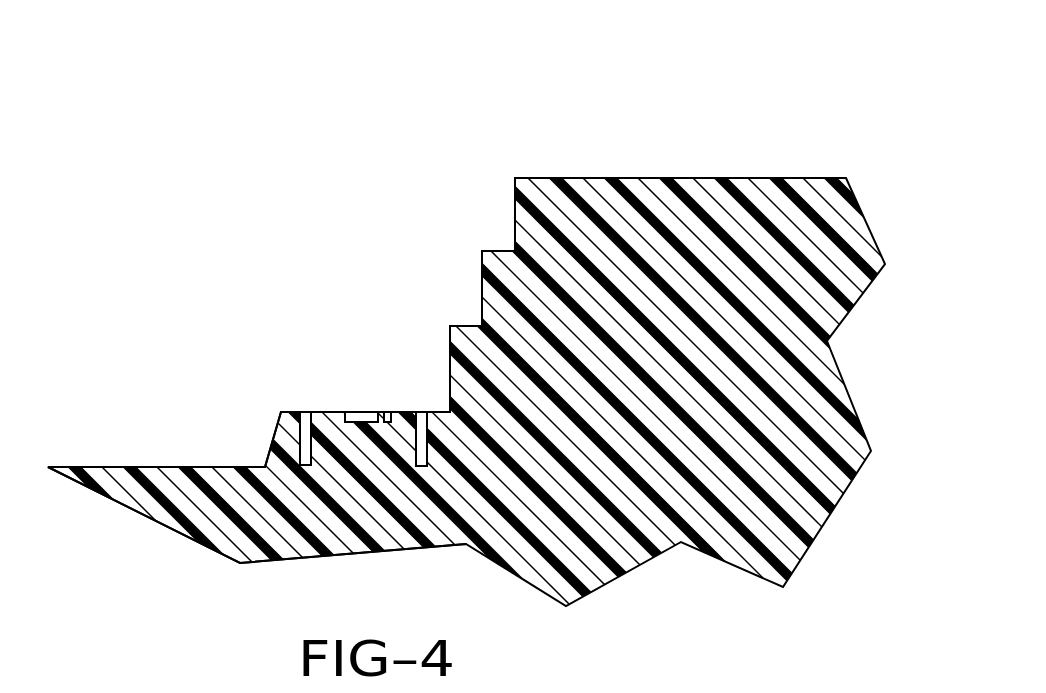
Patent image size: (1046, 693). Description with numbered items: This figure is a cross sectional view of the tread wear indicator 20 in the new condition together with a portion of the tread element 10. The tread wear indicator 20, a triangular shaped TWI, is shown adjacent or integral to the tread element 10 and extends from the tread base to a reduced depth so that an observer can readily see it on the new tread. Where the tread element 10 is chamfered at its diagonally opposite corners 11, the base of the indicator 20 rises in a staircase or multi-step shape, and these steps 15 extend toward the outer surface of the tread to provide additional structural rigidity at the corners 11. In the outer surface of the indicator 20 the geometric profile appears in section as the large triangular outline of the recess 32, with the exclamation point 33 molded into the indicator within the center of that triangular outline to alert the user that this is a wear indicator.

The tread element 10 is at (669, 169).
The corners 11 is at (507, 171).
The steps 15 is at (473, 277).
The tread wear indicator 20 is at (227, 357).
The recess 32 is at (293, 415).
The exclamation point 33 is at (348, 412).